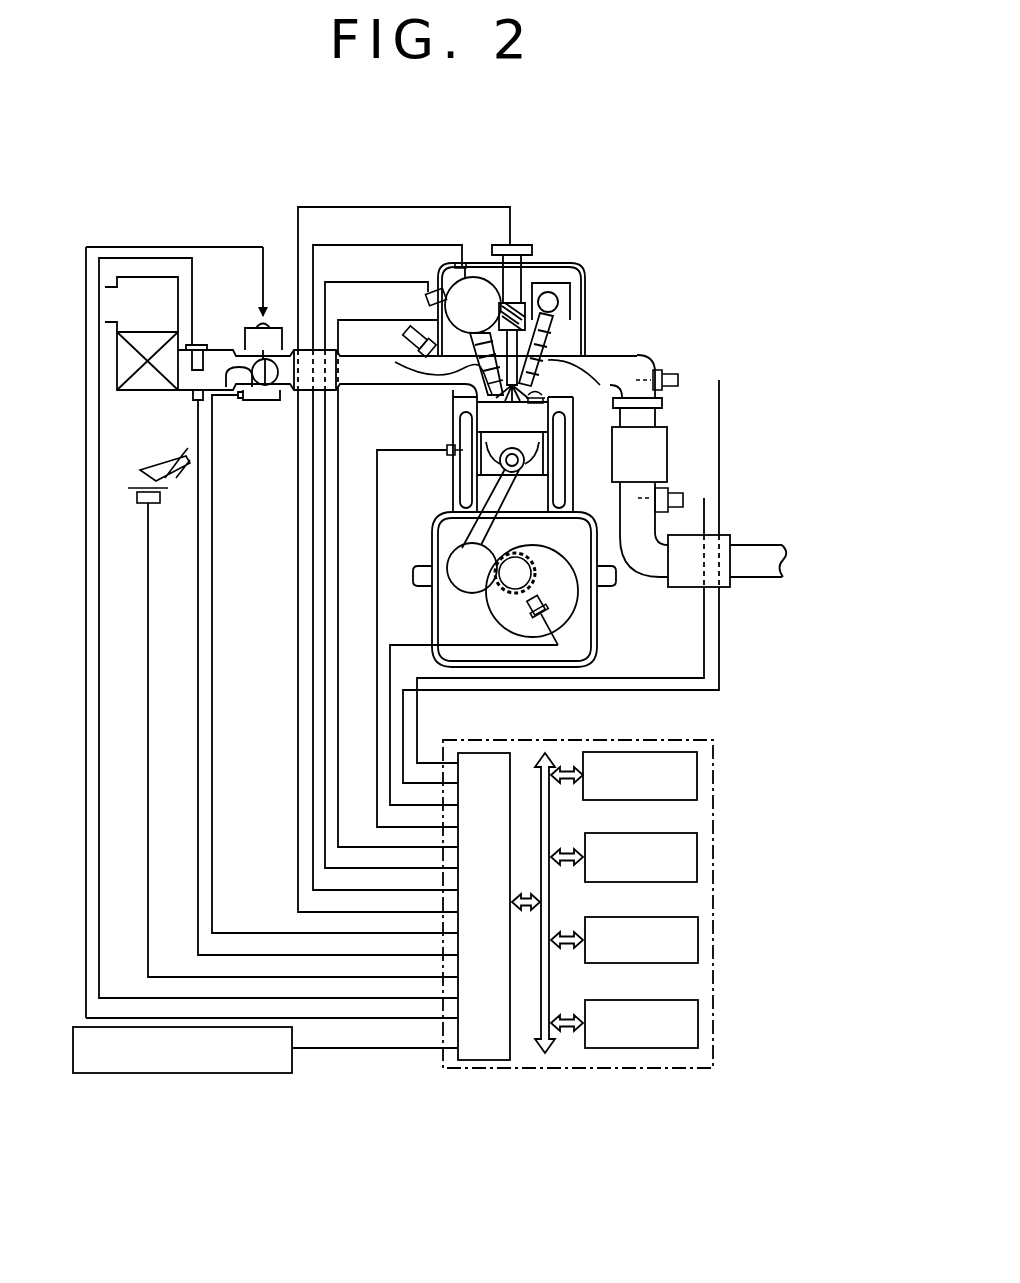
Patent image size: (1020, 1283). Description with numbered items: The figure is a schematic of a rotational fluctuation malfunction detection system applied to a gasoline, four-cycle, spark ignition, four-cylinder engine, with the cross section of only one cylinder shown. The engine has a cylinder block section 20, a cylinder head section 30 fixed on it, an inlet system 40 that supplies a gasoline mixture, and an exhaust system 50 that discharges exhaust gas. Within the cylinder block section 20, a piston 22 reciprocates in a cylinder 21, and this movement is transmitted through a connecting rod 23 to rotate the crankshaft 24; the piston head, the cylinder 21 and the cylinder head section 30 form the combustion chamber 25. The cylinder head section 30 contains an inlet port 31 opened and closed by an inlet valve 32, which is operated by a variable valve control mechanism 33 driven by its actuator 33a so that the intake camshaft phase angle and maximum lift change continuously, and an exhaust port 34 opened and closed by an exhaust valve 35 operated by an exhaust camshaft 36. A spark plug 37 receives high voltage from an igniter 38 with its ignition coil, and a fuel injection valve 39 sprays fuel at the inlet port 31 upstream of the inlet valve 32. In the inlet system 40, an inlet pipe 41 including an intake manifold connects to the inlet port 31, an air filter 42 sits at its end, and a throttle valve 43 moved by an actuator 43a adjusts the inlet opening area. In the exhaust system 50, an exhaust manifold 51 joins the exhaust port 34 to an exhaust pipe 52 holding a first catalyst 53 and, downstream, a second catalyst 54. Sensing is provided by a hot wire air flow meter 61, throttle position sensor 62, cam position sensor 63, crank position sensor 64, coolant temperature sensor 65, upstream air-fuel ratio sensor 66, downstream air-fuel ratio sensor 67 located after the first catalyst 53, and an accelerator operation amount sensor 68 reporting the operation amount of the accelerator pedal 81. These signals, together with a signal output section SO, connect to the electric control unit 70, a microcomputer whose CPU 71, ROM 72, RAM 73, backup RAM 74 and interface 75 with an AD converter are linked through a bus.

The cylinder block section 20 is at (449, 502).
The cylinder 21 is at (458, 425).
The piston 22 is at (472, 485).
The connecting rod 23 is at (515, 497).
The crankshaft 24 is at (548, 545).
The combustion chamber 25 is at (528, 430).
The cylinder head section 30 is at (599, 267).
The inlet port 31 is at (410, 360).
The inlet valve 32 is at (447, 391).
The variable valve control mechanism 33 is at (475, 295).
The actuator of the variable valve control mechanism 33a is at (428, 291).
The exhaust port 34 is at (571, 358).
The exhaust valve 35 is at (562, 405).
The exhaust camshaft 36 is at (550, 292).
The spark plug 37 is at (551, 339).
The igniter 38 is at (511, 272).
The fuel injection valve 39 is at (417, 330).
The inlet system 40 is at (262, 222).
The inlet pipe 41 is at (350, 390).
The air filter 42 is at (133, 392).
The throttle valve 43 is at (237, 393).
The actuator of the throttle valve 43a is at (256, 326).
The exhaust system 50 is at (666, 325).
The exhaust manifold 51 is at (651, 357).
The exhaust pipe 52 is at (643, 577).
The first catalyst 53 is at (668, 438).
The second catalyst 54 is at (724, 535).
The hot wire air flow meter 61 is at (198, 345).
The throttle position sensor 62 is at (265, 398).
The cam position sensor 63 is at (460, 264).
The crank position sensor 64 is at (549, 612).
The coolant temperature sensor 65 is at (447, 452).
The upstream air-fuel ratio sensor 66 is at (681, 376).
The downstream air-fuel ratio sensor 67 is at (674, 492).
The accelerator operation amount sensor 68 is at (142, 505).
The electric control unit 70 is at (600, 1068).
The CPU 71 is at (700, 771).
The ROM 72 is at (700, 853).
The RAM 73 is at (700, 938).
The backup RAM 74 is at (700, 1021).
The interface 75 is at (485, 1062).
The accelerator pedal 81 is at (140, 478).
The signal output section SO is at (197, 1075).